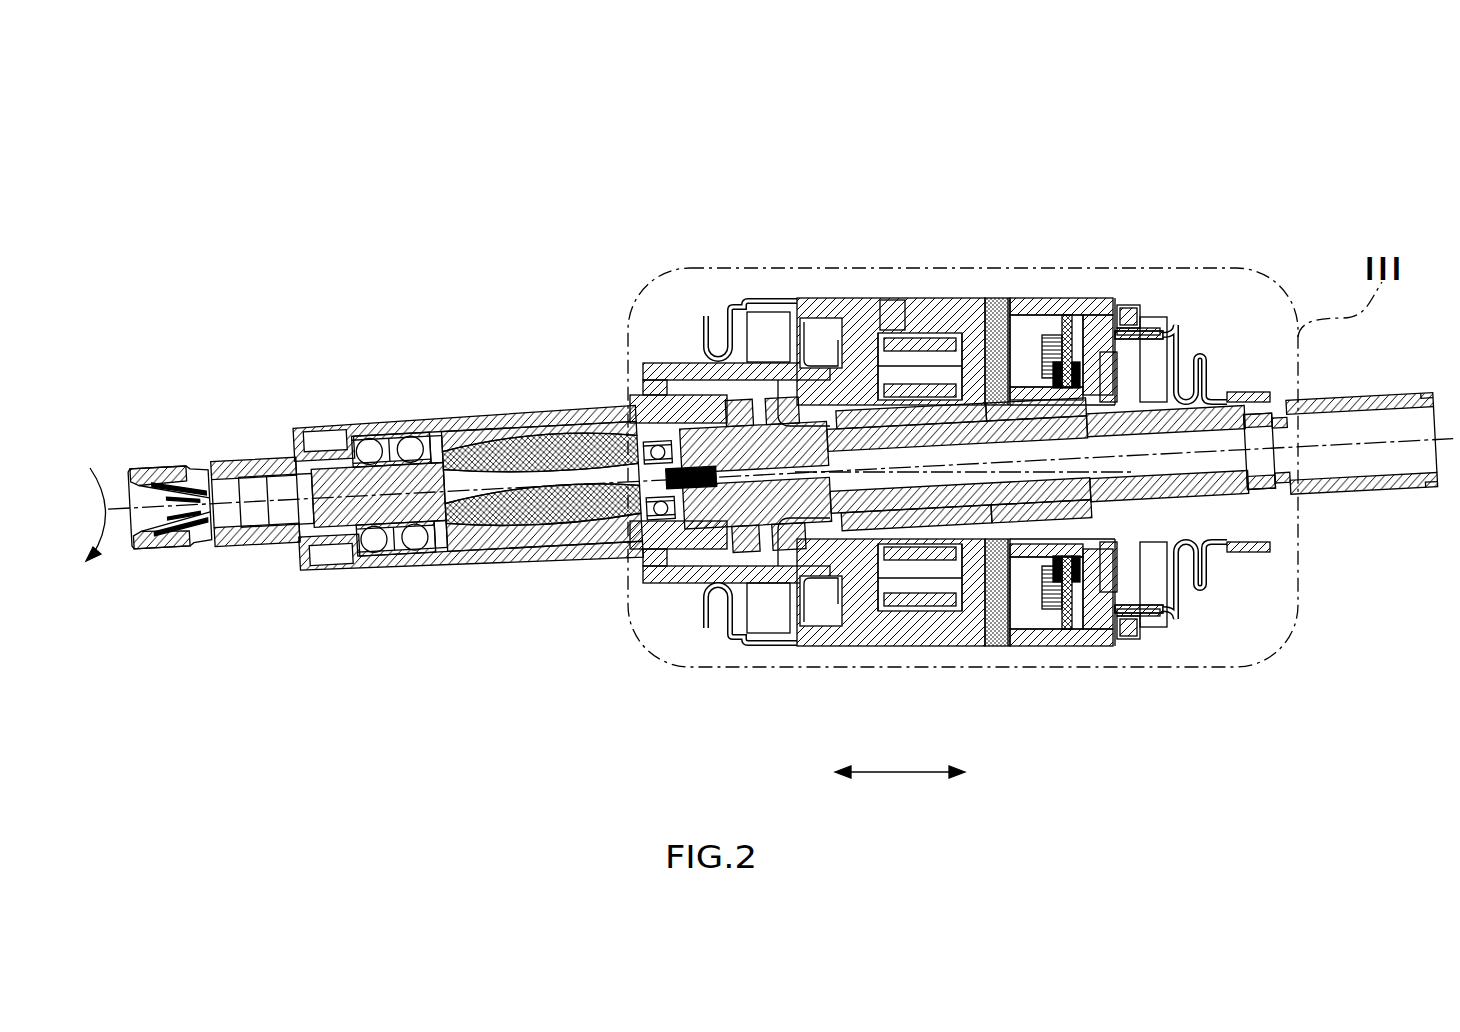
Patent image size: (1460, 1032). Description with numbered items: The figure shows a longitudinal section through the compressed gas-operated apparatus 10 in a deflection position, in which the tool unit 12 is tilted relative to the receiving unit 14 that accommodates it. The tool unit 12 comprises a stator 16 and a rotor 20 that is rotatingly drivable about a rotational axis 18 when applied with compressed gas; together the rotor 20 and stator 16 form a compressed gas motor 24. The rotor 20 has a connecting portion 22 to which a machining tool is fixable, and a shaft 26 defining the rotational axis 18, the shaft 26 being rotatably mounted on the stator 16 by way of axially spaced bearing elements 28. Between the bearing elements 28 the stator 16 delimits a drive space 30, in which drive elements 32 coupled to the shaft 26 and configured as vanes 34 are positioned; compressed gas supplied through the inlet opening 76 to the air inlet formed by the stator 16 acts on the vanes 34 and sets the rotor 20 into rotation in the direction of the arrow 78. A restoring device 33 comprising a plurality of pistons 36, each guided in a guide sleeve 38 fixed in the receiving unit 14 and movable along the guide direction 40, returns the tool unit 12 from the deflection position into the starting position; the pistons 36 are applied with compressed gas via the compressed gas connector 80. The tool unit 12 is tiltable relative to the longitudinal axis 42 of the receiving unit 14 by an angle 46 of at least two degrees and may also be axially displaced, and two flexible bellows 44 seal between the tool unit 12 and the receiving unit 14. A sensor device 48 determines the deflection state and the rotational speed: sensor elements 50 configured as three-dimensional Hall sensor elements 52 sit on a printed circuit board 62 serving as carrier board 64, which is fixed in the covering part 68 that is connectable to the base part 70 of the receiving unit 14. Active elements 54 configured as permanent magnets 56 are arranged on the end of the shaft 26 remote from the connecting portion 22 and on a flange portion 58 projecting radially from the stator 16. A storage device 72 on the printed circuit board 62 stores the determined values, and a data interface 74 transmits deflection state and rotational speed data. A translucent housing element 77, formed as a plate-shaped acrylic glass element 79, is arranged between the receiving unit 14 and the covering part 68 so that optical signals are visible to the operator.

The compressed gas-operated apparatus 10 is at (1130, 186).
The tool unit 12 is at (600, 377).
The receiving unit 14 is at (916, 280).
The stator 16 is at (1205, 540).
The rotational axis 18 is at (265, 548).
The rotor 20 is at (258, 462).
The connecting portion 22 is at (148, 455).
The compressed gas motor 24 is at (455, 396).
The shaft 26 is at (432, 568).
The bearing elements 28 is at (383, 566).
The drive space 30 is at (512, 505).
The drive elements 32 is at (500, 440).
The restoring device 33 is at (893, 302).
The vanes 34 is at (540, 440).
The pistons 36 is at (851, 300).
The guide sleeve 38 is at (948, 300).
The guide direction 40 is at (903, 773).
The longitudinal axis 42 is at (1300, 407).
The bellows 44 is at (702, 310).
The angle 46 is at (1138, 608).
The sensor device 48 is at (1094, 632).
The sensor elements 50 is at (1048, 300).
The 3D Hall sensor elements 52 is at (1046, 560).
The active element 54 is at (648, 583).
The permanent magnet 56 is at (1170, 578).
The flange portion 58 is at (1120, 348).
The printed circuit board 62 is at (1078, 302).
The carrier board 64 is at (1077, 303).
The covering part 68 is at (1020, 636).
The base part 70 is at (850, 634).
The storage device 72 is at (1058, 650).
The data interface 74 is at (1090, 608).
The inlet opening 76 is at (1410, 470).
The translucent housing element 77 is at (991, 300).
The arrow 78 is at (95, 566).
The acrylic glass element 79 is at (1007, 300).
The compressed gas connector 80 is at (1132, 304).